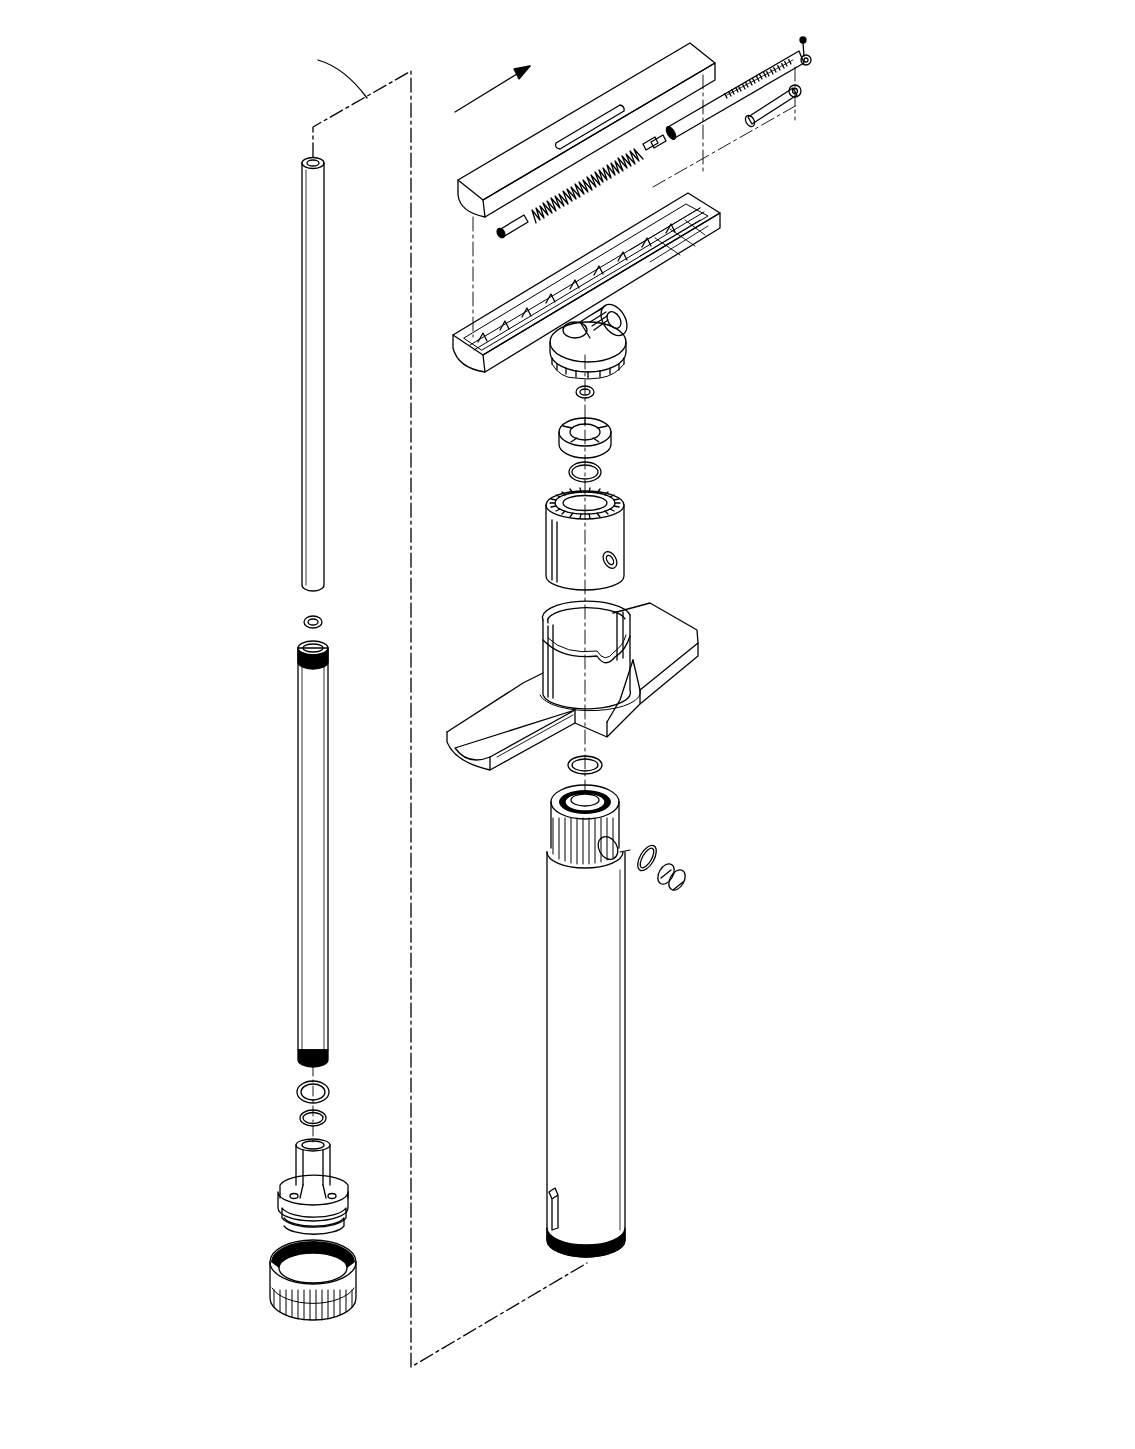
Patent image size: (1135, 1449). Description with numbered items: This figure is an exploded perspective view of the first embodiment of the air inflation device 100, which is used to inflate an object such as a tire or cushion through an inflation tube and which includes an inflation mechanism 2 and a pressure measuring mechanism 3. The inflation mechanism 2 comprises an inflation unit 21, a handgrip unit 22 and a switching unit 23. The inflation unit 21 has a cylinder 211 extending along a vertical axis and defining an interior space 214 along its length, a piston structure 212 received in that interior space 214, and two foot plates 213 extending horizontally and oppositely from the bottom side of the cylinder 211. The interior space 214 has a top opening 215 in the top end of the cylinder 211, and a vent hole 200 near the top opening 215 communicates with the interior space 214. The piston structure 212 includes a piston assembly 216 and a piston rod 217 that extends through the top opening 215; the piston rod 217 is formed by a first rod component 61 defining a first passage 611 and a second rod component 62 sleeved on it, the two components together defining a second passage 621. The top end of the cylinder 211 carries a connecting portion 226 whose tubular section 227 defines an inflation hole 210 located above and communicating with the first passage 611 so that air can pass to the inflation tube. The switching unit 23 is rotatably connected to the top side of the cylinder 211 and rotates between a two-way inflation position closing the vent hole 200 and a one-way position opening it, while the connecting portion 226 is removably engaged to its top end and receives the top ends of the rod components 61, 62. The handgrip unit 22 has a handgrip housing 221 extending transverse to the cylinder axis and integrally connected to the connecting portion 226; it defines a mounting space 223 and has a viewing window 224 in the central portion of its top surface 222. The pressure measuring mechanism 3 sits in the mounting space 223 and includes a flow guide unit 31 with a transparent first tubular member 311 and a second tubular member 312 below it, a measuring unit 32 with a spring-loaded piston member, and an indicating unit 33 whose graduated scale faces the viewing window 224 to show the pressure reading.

The air inflation device 100 is at (196, 297).
The inflation mechanism 2 is at (733, 693).
The inflation unit 21 is at (640, 1004).
The cylinder 211 is at (625, 1070).
The piston structure 212 is at (246, 491).
The foot plates 213 is at (668, 625).
The interior space 214 is at (652, 811).
The top opening 215 is at (598, 792).
The piston assembly 216 is at (280, 1182).
The piston rod 217 is at (285, 797).
The vent hole 200 is at (617, 840).
The handgrip unit 22 is at (648, 52).
The handgrip housing 221 is at (470, 362).
The top surface 222 is at (690, 60).
The mounting space 223 is at (507, 322).
The viewing window 224 is at (575, 128).
The connecting portion 226 is at (597, 353).
The tubular section 227 is at (602, 328).
The inflation hole 210 is at (612, 335).
The switching unit 23 is at (615, 537).
The pressure measuring mechanism 3 is at (817, 53).
The flow guide unit 31 is at (858, 206).
The first tubular member 311 is at (713, 113).
The second tubular member 312 is at (783, 113).
The measuring unit 32 is at (548, 233).
The indicating unit 33 is at (780, 70).
The first rod component 61 is at (313, 365).
The first passage 611 is at (305, 163).
The second rod component 62 is at (308, 893).
The second passage 621 is at (307, 643).